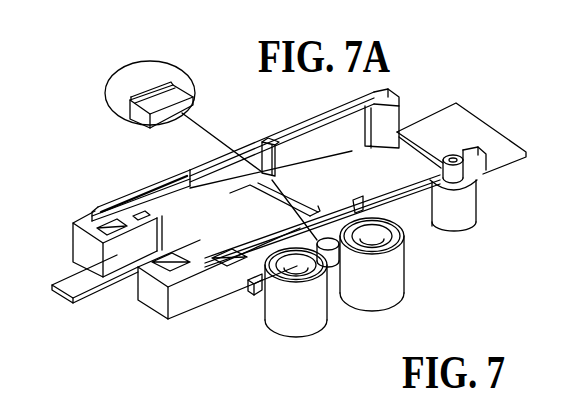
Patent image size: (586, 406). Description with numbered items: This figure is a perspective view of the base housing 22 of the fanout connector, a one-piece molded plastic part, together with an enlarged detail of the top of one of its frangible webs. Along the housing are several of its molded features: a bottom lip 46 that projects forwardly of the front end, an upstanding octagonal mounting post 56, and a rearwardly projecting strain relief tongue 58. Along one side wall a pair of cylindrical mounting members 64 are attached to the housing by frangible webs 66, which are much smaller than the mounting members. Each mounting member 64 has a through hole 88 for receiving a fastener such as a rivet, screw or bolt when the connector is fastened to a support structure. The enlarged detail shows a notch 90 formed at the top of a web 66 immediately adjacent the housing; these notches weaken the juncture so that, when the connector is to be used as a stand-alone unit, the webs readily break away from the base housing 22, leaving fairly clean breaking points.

In FIG. 7, the base housing 22 is at (58, 219).
In FIG. 7, the bottom lip 46 is at (468, 129).
In FIG. 7, the octagonal mounting post 56 is at (472, 182).
In FIG. 7, the strain relief tongue 58 is at (80, 289).
In FIG. 7, the cylindrical mounting members 64 is at (383, 281).
In FIG. 7A, the frangible webs 66 is at (178, 108).
In FIG. 7, the frangible webs 66 is at (256, 290).
In FIG. 7, the through holes 88 is at (376, 240).
In FIG. 7A, the notches 90 is at (146, 95).